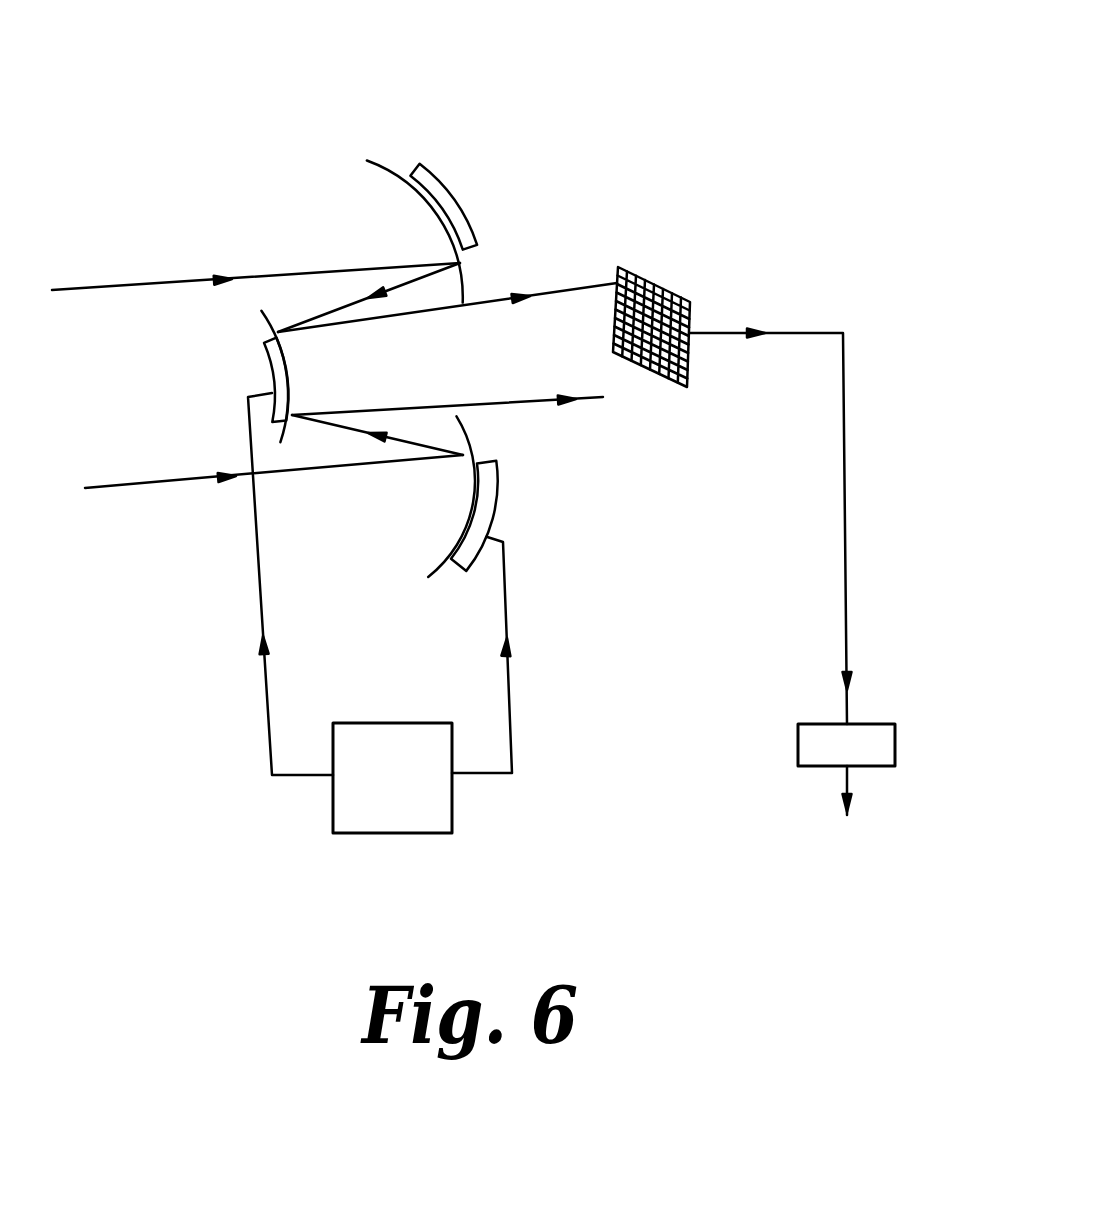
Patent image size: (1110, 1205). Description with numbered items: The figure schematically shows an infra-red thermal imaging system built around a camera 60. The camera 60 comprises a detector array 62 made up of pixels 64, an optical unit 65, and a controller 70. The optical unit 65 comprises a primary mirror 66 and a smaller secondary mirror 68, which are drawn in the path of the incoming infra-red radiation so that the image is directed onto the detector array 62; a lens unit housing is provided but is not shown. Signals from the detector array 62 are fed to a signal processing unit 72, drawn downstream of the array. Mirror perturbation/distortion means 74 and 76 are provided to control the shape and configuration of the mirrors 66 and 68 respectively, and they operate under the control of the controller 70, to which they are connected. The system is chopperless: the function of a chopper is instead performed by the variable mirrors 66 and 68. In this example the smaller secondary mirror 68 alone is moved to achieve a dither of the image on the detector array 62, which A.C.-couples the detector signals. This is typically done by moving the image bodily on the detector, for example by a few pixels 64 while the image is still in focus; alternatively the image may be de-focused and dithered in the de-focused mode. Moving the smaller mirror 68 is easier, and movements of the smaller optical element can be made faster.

The camera 60 is at (548, 175).
The detector array 62 is at (698, 277).
The pixels 64 is at (673, 292).
The optical unit 65 is at (320, 193).
The primary mirror 66 is at (405, 175).
The secondary mirror 68 is at (290, 368).
The controller 70 is at (364, 778).
The signal processing unit 72 is at (823, 763).
The mirror perturbation/distortion means 74 is at (468, 224).
The mirror perturbation/distortion means 76 is at (268, 360).